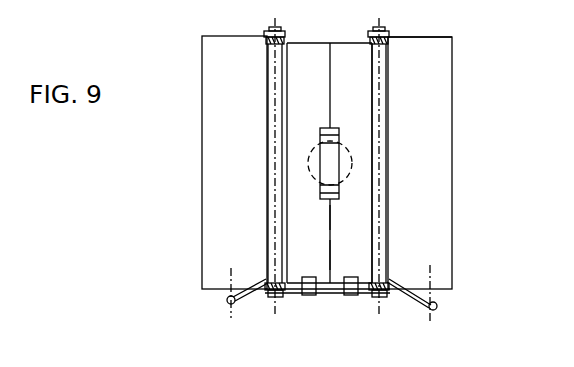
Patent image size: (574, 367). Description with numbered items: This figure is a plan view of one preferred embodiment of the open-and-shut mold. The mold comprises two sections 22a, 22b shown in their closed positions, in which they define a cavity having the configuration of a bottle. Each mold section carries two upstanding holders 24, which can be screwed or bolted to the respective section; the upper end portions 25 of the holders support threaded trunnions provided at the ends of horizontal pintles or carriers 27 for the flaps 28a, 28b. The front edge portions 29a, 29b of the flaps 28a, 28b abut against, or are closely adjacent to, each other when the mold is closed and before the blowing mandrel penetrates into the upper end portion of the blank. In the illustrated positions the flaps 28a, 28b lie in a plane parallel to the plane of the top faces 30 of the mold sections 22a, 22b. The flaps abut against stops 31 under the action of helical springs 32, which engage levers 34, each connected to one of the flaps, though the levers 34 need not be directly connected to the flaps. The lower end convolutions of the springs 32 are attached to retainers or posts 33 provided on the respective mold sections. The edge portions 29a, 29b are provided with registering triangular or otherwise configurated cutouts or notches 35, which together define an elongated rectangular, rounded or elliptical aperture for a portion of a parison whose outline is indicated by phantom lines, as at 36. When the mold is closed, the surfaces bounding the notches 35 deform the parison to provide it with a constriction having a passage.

The mold section 22a is at (215, 138).
The mold section 22b is at (446, 140).
The upstanding holder 24 is at (373, 297).
The upper end portion 25 is at (401, 0).
The horizontal pintle or carrier 27 is at (380, 140).
The flap 28a is at (311, 92).
The flap 28b is at (356, 92).
The front edge portion 29a is at (330, 262).
The front edge portion 29b is at (330, 218).
The top face 30 is at (240, 36).
The stop 31 is at (315, 296).
The helical spring 32 is at (436, 311).
The retainer or post 33 is at (437, 303).
The lever 34 is at (414, 297).
The cutout or notch 35 is at (341, 168).
The parison outline 36 is at (309, 178).